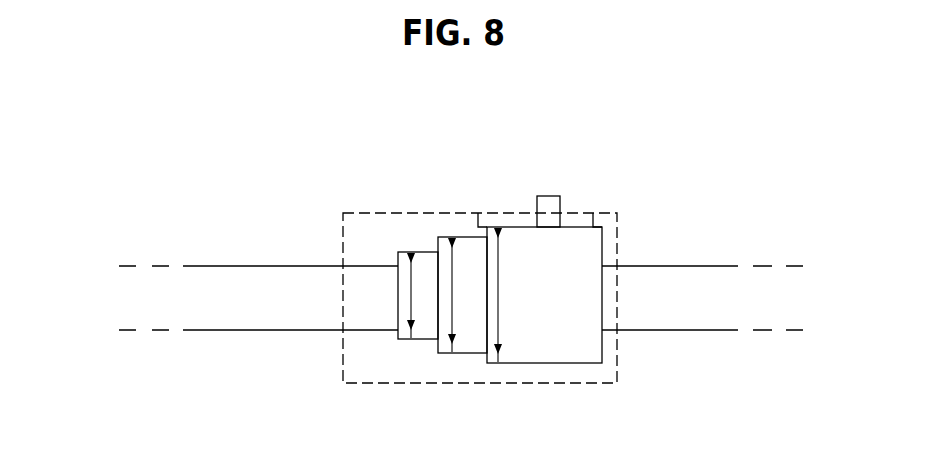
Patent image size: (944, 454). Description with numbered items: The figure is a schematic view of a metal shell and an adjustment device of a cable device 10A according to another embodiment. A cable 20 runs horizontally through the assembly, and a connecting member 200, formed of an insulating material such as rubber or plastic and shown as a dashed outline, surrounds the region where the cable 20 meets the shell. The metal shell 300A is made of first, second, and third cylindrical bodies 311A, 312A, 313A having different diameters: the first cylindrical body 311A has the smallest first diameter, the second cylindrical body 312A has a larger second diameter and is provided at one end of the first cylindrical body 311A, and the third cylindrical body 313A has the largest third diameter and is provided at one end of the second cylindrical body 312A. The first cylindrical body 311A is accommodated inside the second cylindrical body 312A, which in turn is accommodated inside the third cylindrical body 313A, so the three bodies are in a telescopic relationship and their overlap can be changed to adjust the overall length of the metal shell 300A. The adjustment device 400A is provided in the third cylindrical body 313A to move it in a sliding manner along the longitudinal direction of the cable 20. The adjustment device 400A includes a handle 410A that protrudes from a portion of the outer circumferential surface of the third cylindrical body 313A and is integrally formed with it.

The cable device 10A is at (524, 265).
The cable 20 is at (245, 275).
The connecting member 200 is at (379, 213).
The metal shell 300A is at (494, 286).
The first cylindrical body 311A is at (425, 338).
The second cylindrical body 312A is at (468, 347).
The third cylindrical body 313A is at (555, 355).
The adjustment device 400A is at (537, 164).
The handle 410A is at (547, 203).